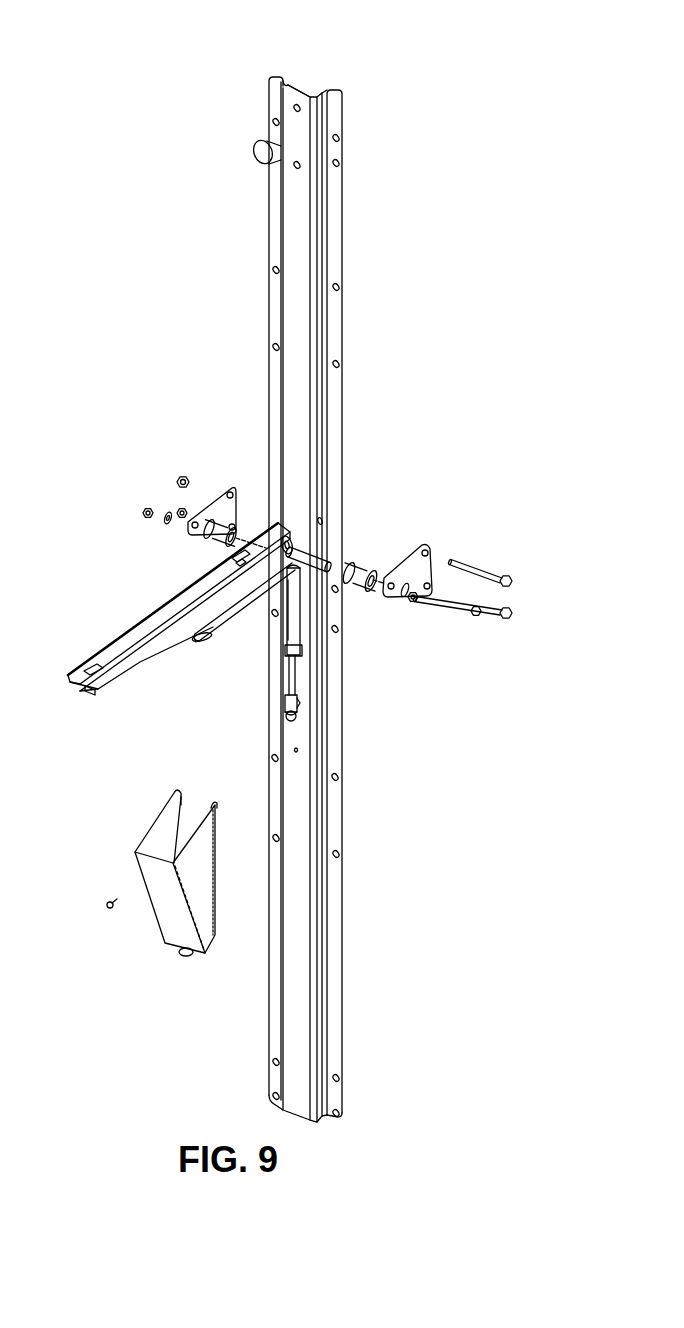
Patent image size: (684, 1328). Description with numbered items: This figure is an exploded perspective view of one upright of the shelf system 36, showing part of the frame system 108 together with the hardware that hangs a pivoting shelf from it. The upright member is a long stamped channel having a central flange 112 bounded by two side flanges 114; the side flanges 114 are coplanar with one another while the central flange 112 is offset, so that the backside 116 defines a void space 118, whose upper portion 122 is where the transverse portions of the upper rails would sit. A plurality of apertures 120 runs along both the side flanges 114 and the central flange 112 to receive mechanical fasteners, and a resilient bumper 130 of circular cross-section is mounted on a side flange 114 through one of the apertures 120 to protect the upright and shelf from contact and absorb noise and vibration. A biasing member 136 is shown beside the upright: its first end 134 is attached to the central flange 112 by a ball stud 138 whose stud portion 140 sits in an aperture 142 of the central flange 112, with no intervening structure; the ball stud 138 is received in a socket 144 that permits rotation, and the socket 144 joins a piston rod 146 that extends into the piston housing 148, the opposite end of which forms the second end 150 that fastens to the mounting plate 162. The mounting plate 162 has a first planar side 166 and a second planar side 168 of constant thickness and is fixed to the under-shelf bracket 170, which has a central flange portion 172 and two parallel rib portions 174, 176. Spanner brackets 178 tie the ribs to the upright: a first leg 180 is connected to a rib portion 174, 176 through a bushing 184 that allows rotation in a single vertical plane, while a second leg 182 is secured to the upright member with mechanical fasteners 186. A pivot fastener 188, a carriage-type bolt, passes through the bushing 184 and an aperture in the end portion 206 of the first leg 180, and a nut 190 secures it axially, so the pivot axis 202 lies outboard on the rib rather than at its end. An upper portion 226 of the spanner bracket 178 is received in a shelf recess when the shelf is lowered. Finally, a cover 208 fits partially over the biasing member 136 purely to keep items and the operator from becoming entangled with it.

The shelf system 36 is at (299, 568).
The frame system 108 is at (354, 97).
The central flange 112 is at (300, 233).
The side flanges 114 is at (270, 298).
The backside 116 is at (285, 80).
The void space 118 is at (306, 86).
The apertures 120 is at (340, 140).
The upper portion 122 is at (235, 139).
The bumpers 130 is at (256, 162).
The first end 134 is at (295, 674).
The biasing member 136 is at (300, 632).
The ball stud 138 is at (295, 719).
The stud portion 140 is at (297, 708).
The aperture 142 is at (299, 701).
The socket 144 is at (284, 713).
The piston rod 146 is at (289, 679).
The piston housing 148 is at (300, 618).
The second end 150 is at (316, 598).
The mounting plate 162 is at (194, 642).
The first planar side 166 is at (224, 623).
The second planar side 168 is at (214, 638).
The under-shelf bracket 170 is at (92, 691).
The central flange portion 172 is at (147, 624).
The rib portion 174 is at (67, 678).
The rib portion 176 is at (122, 670).
The spanner bracket 178 is at (211, 506).
The first leg 180 is at (182, 511).
The second leg 182 is at (233, 530).
The bushing 184 is at (318, 553).
The mechanical fasteners 186 is at (510, 580).
The pivot fastener 188 is at (478, 616).
The nut 190 is at (150, 520).
The pivot axis 202 is at (135, 507).
The end portion 206 is at (290, 546).
The cover 208 is at (165, 918).
The upper portion 226 is at (321, 551).